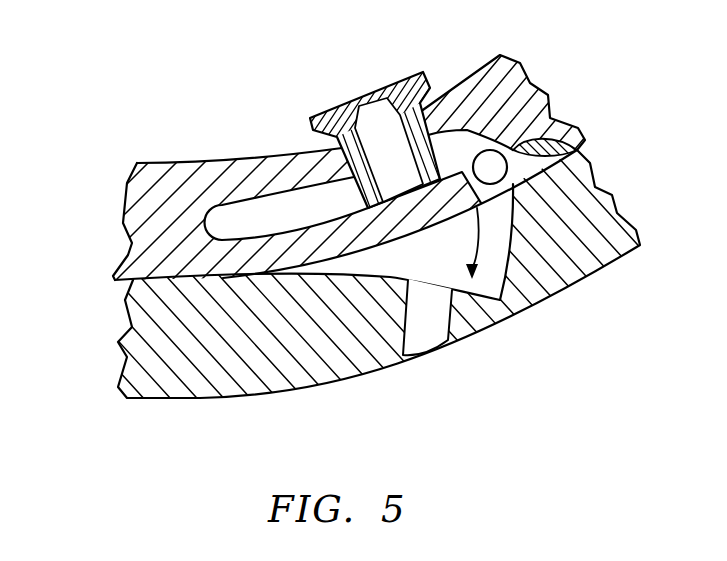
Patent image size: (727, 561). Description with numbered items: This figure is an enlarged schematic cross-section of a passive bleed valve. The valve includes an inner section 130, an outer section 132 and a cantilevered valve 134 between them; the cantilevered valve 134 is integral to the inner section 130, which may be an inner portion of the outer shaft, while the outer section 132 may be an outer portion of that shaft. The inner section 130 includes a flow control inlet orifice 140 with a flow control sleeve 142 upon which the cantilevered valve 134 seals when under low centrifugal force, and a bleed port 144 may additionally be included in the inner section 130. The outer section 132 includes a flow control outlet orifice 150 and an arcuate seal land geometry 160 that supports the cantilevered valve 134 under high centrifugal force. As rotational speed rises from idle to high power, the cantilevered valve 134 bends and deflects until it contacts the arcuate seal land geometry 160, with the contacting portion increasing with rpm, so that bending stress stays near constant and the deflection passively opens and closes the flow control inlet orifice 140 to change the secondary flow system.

The inner section 130 is at (140, 240).
The outer section 132 is at (140, 343).
The cantilevered valve 134 is at (363, 238).
The flow control inlet orifice 140 is at (443, 135).
The flow control sleeve 142 is at (322, 117).
The bleed port 144 is at (498, 163).
The flow control outlet orifice 150 is at (427, 340).
The arcuate seal land geometry 160 is at (483, 294).